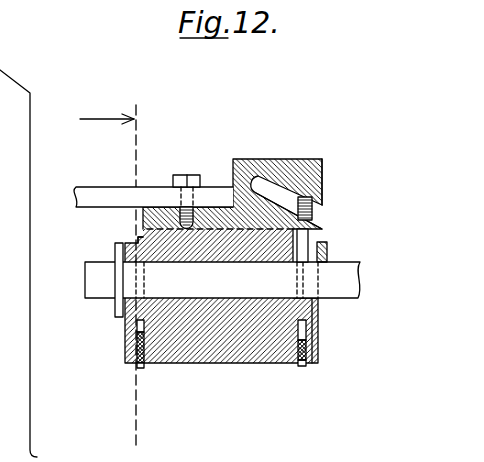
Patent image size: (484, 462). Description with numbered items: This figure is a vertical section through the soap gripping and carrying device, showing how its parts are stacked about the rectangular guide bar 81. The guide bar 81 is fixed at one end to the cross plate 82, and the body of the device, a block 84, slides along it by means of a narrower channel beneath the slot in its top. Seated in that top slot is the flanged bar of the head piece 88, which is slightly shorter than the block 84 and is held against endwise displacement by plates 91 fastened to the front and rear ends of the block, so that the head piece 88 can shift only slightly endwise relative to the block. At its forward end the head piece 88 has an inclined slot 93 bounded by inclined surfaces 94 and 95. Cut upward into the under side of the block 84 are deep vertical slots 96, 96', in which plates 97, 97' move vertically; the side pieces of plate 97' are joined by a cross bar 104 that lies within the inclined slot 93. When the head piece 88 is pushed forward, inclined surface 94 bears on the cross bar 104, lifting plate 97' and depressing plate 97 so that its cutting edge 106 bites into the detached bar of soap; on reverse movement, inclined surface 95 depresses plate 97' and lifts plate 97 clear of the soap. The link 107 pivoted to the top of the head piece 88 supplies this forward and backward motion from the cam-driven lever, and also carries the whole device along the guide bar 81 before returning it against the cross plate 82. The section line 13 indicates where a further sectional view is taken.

The section line 13- 13 is at (115, 266).
The guide bar 81 is at (222, 280).
The cross plate 82 is at (115, 247).
The block 84 is at (242, 364).
The head piece 88 is at (250, 161).
The plates 91 is at (135, 243).
The inclined slot 93 is at (272, 186).
The inclined surface 94 is at (278, 203).
The inclined surface 95 is at (323, 167).
The vertical slot 96 is at (161, 363).
The plate 97 is at (112, 354).
The vertical slot 96' is at (310, 315).
The plate 97' is at (332, 343).
The cross bar 104 is at (312, 209).
The cutting edge 106 is at (137, 367).
The link 107 is at (158, 184).